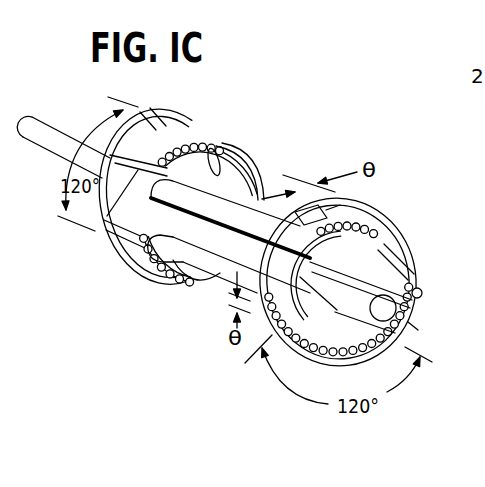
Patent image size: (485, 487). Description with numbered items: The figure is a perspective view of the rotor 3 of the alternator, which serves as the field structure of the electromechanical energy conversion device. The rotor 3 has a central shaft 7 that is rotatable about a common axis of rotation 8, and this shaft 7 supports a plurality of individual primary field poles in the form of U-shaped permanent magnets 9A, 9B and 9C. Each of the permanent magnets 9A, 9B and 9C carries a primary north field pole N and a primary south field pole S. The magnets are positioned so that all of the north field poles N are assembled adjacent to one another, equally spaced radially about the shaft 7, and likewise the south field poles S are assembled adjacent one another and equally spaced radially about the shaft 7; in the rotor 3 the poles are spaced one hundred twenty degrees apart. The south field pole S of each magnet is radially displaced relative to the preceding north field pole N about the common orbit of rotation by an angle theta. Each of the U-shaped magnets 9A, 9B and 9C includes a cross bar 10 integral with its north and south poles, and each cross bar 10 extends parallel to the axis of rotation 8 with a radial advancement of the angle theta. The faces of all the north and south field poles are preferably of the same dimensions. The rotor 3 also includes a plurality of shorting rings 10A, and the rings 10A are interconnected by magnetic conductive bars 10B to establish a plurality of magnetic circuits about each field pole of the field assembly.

The rotor 3 is at (265, 146).
The central shaft 7 is at (62, 152).
The common axis of rotation 8 is at (24, 122).
The U-shaped permanent magnet 9A is at (187, 133).
The U-shaped permanent magnet 9B is at (128, 250).
The U-shaped permanent magnet 9C is at (418, 310).
The cross bar 10 is at (222, 283).
The shorting ring 10A is at (135, 218).
The magnetic conductive bar 10B is at (160, 130).
The primary north field pole N is at (184, 137).
The primary south field pole S is at (328, 206).